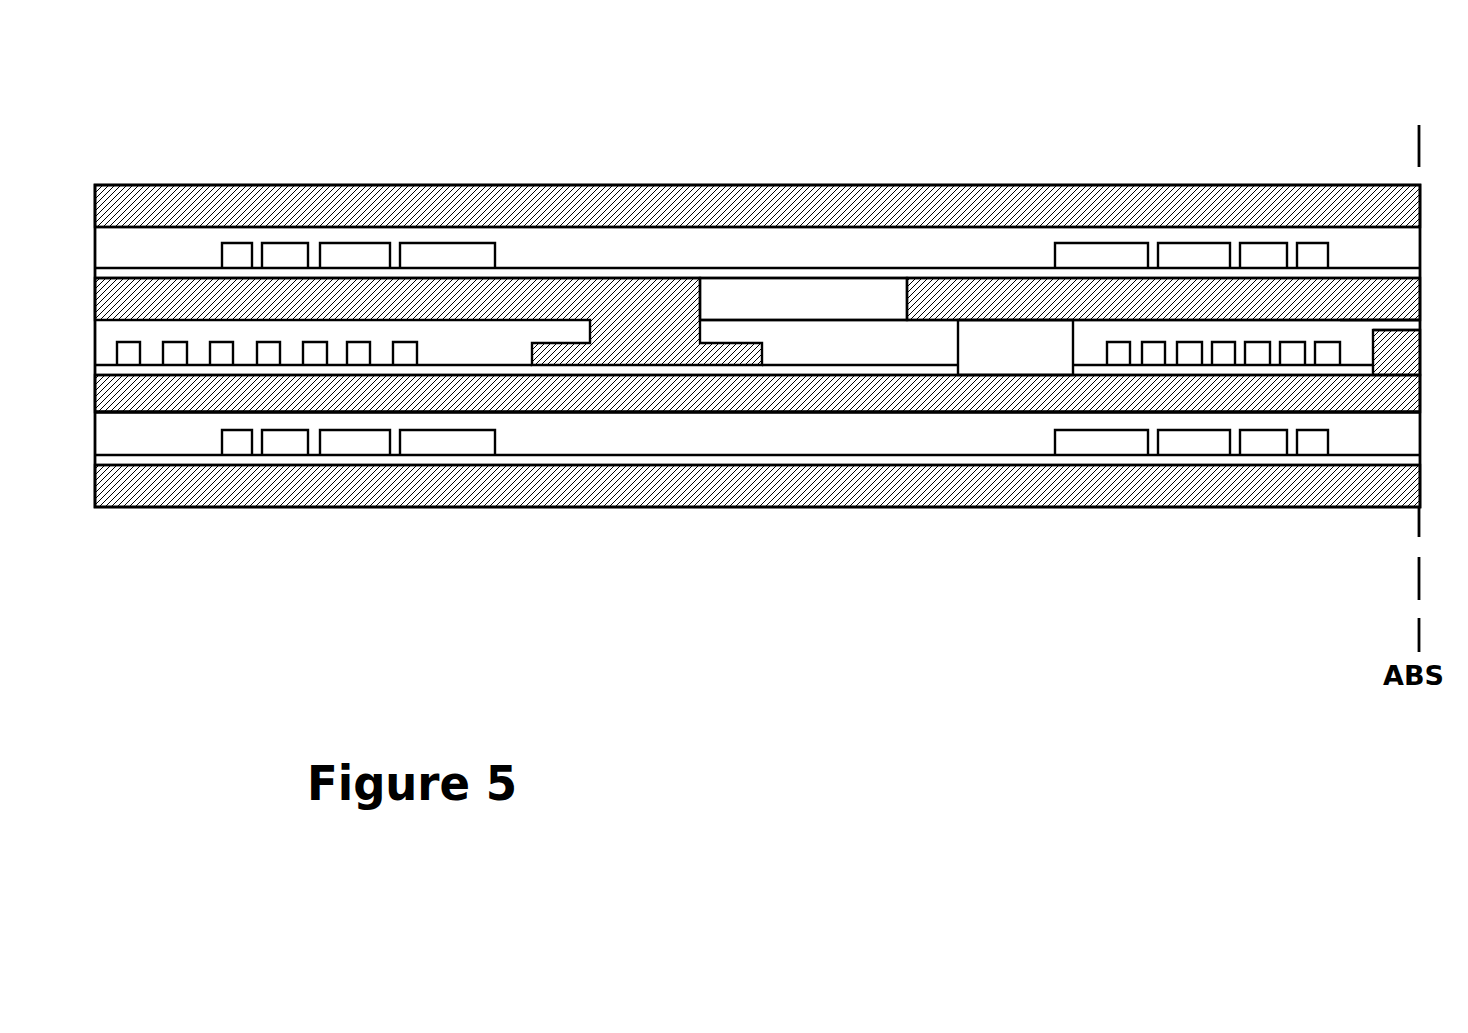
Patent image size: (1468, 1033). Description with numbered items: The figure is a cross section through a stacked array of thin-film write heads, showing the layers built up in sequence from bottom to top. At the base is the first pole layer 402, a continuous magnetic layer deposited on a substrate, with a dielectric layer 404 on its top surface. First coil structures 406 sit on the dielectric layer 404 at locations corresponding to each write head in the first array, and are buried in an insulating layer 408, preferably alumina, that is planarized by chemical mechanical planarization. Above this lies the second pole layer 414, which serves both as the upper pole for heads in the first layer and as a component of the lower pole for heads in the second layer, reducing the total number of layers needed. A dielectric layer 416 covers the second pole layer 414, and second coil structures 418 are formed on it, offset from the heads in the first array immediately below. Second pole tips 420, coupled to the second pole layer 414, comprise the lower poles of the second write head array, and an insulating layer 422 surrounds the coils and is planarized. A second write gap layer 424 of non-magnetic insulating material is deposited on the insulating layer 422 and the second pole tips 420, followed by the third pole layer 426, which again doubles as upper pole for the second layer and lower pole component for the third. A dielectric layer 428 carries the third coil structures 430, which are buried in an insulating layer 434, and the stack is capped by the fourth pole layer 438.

The first pole layer 402 is at (848, 478).
The dielectric layer 404 is at (925, 460).
The first coil structures 406 is at (450, 432).
The insulating layer 408 is at (907, 443).
The second pole layer 414 is at (563, 388).
The dielectric layer 416 is at (292, 368).
The second coil structures 418 is at (355, 353).
The second pole tips 420 is at (1408, 363).
The insulating layer 422 is at (897, 355).
The second write gap layer 424 is at (1397, 323).
The third pole layer 426 is at (920, 297).
The dielectric layer 428 is at (1003, 275).
The third coil structures 430 is at (353, 243).
The insulating layer 434 is at (878, 258).
The fourth pole layer 438 is at (1210, 205).